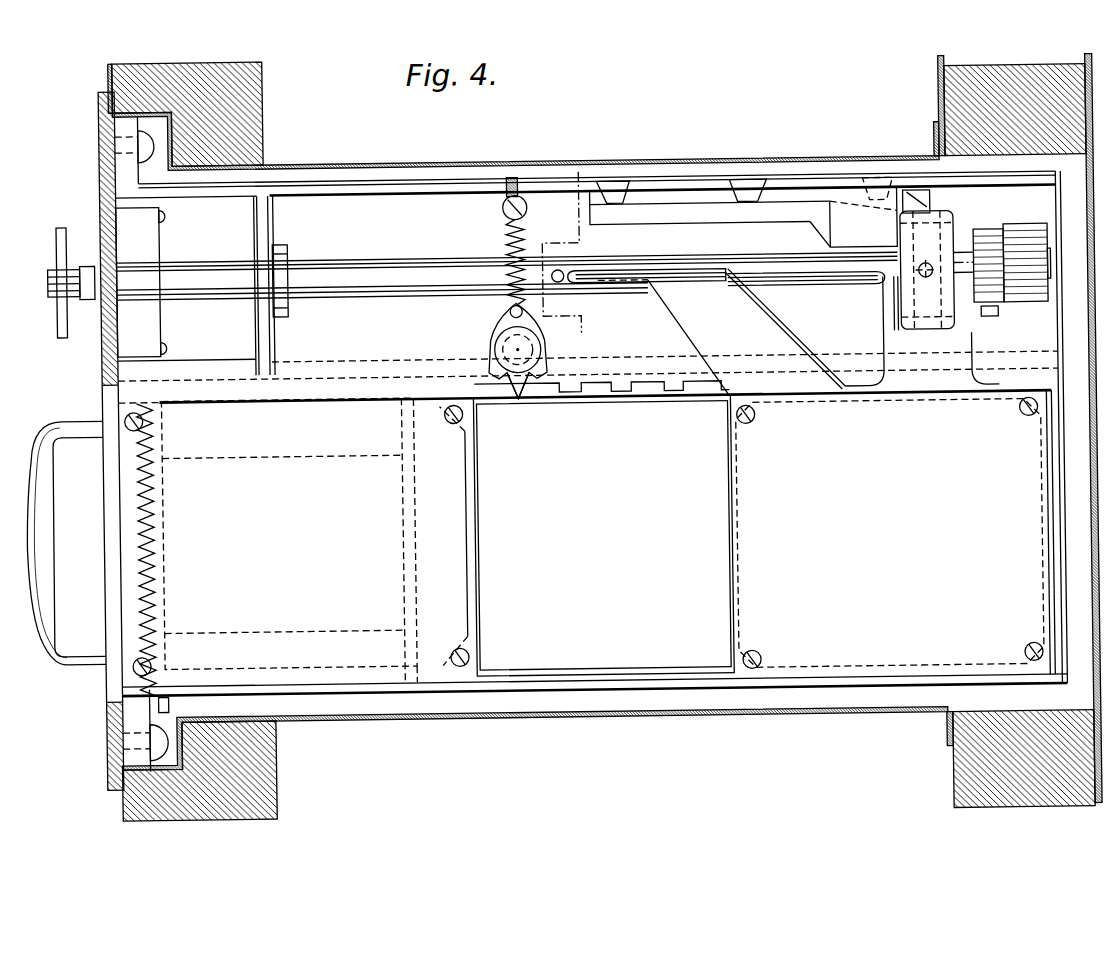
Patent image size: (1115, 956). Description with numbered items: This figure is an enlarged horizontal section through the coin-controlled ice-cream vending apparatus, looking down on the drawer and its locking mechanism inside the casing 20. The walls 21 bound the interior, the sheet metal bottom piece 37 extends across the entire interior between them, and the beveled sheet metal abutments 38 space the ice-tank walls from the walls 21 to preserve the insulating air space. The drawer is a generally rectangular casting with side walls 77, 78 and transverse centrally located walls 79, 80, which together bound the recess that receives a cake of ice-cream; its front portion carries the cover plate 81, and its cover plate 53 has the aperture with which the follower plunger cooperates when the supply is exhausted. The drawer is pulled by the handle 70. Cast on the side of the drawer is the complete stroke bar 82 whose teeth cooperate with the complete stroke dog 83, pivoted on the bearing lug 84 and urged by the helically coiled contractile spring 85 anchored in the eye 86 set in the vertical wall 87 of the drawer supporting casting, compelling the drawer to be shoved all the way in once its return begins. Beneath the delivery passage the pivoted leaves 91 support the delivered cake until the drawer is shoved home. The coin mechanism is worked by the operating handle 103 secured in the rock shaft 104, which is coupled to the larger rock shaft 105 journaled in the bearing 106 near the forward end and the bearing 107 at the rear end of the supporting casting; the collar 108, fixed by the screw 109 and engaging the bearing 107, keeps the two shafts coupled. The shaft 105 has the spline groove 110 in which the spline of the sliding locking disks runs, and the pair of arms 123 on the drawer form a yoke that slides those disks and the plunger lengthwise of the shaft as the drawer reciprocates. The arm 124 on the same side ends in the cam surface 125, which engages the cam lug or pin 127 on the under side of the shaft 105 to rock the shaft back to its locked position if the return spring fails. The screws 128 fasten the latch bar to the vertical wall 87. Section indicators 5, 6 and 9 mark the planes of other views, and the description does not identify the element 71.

The section line 5-5 / screw 5 is at (141, 397).
The section line 6- 6 is at (582, 172).
The section line 9- 9 is at (800, 231).
The casing 20 is at (116, 71).
The walls 21 is at (267, 101).
The sheet metal bottom piece 37 is at (716, 717).
The sheet metal abutments 38 is at (706, 161).
The cover plate 53 is at (889, 532).
The handle 70 is at (40, 605).
The side wall 71 is at (103, 685).
The side wall 77 is at (604, 403).
The side wall 78 is at (617, 669).
The transverse wall 79 is at (477, 521).
The transverse wall 80 is at (733, 555).
The cover plate 81 is at (296, 541).
The complete stroke teeth or bar 82 is at (654, 381).
The complete stroke dog 83 is at (526, 395).
The bearing lug 84 is at (545, 345).
The helically coiled contractile spring 85 is at (508, 249).
The eye 86 is at (506, 207).
The vertical wall 87 is at (416, 193).
The leaves 91 is at (325, 449).
The operating handle 103 is at (59, 229).
The rock shaft 104 is at (80, 293).
The rock shaft 105 is at (332, 292).
The bearing 106 is at (290, 313).
The bearing 107 is at (1037, 308).
The collar 108 is at (997, 296).
The screw 109 is at (986, 322).
The spline groove 110 is at (784, 275).
The arms 123 is at (885, 318).
The arm 124 is at (747, 332).
The cam surface 125 is at (682, 269).
The cam lug or pin 127 is at (592, 295).
The screws 128 is at (759, 183).